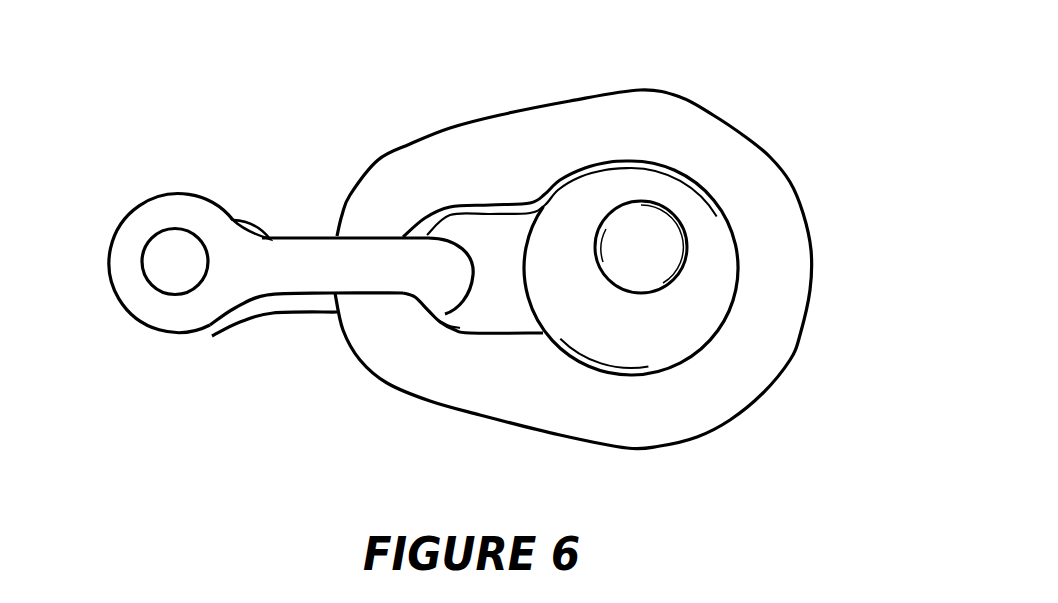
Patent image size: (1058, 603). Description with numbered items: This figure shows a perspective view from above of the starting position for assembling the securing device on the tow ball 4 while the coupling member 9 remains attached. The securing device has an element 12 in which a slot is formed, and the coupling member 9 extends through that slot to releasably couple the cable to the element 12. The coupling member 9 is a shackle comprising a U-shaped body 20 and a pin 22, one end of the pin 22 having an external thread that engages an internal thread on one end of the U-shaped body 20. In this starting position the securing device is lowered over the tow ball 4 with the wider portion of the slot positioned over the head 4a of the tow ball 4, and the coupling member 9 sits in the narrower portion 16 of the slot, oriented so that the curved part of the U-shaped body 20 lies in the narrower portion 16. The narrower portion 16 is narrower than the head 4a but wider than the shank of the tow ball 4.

The tow ball 4 is at (700, 232).
The head 4a is at (657, 197).
The coupling member 9 is at (175, 210).
The element 12 is at (440, 168).
The second portion 16 is at (493, 230).
The U-shaped body 20 is at (205, 312).
The pin 22 is at (162, 280).